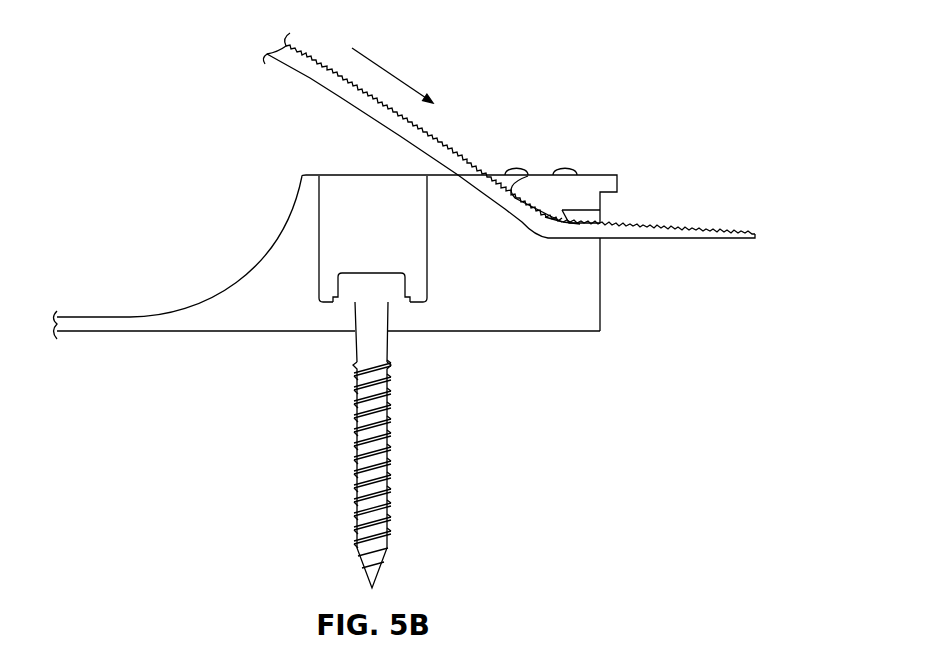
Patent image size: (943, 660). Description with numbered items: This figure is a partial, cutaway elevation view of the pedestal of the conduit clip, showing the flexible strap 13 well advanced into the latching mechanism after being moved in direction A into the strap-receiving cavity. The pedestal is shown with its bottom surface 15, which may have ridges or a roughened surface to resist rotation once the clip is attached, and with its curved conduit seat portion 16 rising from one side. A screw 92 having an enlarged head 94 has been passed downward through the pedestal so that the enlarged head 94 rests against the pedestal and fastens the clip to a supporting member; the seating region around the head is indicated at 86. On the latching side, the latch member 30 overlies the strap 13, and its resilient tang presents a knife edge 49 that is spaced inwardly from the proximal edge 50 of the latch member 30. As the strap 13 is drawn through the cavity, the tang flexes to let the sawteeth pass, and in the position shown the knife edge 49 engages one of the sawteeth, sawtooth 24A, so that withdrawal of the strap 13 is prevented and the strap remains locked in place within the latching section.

The flexible strap 13 is at (309, 79).
The bottom surface 15 is at (492, 332).
The curved conduit seat portion 16 is at (274, 246).
The sawtooth 24A is at (570, 224).
The latch member 30 is at (547, 193).
The knife edge 49 is at (563, 231).
The proximal edge 50 is at (568, 213).
The mounting block 86 is at (368, 204).
The screw 92 is at (374, 425).
The enlarged head 94 is at (353, 283).
The direction A is at (388, 72).